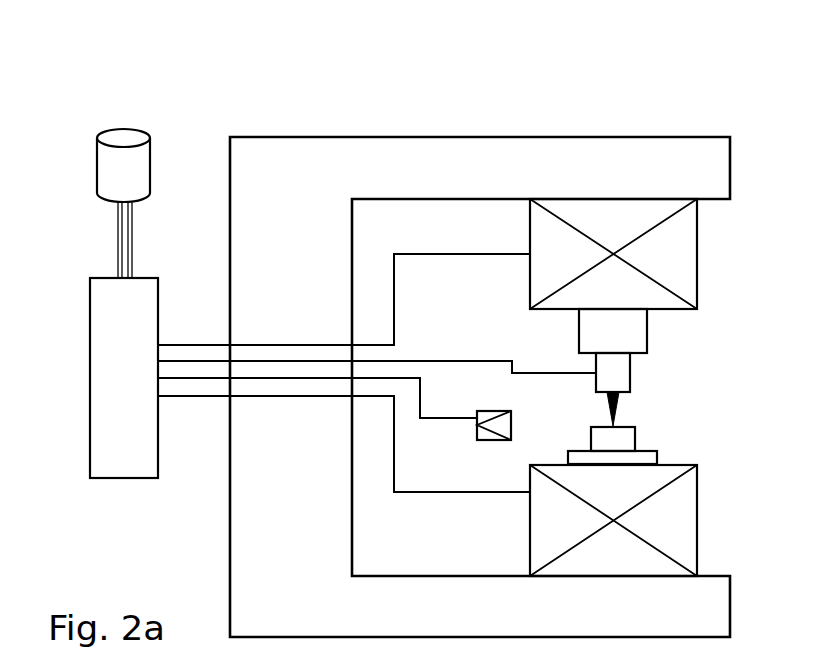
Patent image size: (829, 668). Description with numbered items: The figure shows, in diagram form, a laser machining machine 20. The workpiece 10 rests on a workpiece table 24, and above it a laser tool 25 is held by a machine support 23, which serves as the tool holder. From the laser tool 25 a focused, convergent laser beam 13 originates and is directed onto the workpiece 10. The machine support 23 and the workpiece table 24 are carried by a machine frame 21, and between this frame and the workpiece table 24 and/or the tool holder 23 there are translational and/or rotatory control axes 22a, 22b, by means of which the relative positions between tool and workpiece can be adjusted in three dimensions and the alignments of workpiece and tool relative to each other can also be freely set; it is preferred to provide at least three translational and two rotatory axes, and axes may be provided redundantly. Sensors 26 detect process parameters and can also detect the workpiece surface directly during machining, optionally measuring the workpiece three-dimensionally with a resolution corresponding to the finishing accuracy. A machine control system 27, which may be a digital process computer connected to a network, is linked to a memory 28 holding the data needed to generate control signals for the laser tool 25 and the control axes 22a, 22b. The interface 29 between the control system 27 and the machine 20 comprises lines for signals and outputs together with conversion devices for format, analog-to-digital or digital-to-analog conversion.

The machine 20 is at (655, 80).
The machine frame 21 is at (722, 162).
The control axis 22a is at (697, 226).
The control axis 22b is at (685, 510).
The machine support 23 is at (647, 322).
The workpiece table 24 is at (650, 456).
The laser tool 25 is at (622, 364).
The sensors 26 is at (480, 434).
The machine control system 27 is at (100, 438).
The memory 28 is at (105, 163).
The interface 29 is at (197, 388).
The laser beam 13 is at (617, 402).
The workpiece 10 is at (628, 435).